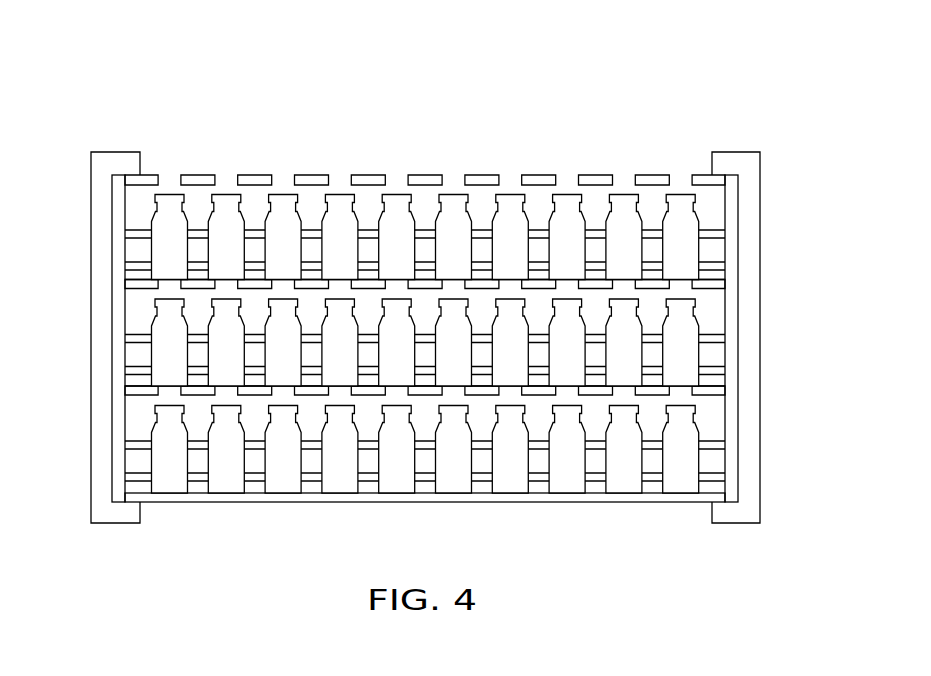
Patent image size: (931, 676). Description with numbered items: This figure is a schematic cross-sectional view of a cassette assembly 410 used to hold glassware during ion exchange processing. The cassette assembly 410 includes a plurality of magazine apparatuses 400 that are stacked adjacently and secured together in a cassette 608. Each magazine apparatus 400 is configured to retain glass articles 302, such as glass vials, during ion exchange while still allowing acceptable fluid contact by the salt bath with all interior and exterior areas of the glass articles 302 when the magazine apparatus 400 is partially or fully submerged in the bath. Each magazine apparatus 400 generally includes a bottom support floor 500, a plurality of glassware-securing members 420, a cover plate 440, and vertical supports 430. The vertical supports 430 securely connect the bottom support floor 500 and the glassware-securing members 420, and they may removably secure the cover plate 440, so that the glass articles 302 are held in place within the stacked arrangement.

The cassette assembly 410 is at (540, 103).
The magazine apparatus 400 is at (448, 368).
The bottom support floor 500 is at (715, 292).
The glass article 302 is at (152, 323).
The glassware-securing member 420 is at (138, 342).
The vertical support 430 is at (740, 198).
The cover plate 440 is at (705, 175).
The cassette 608 is at (91, 487).